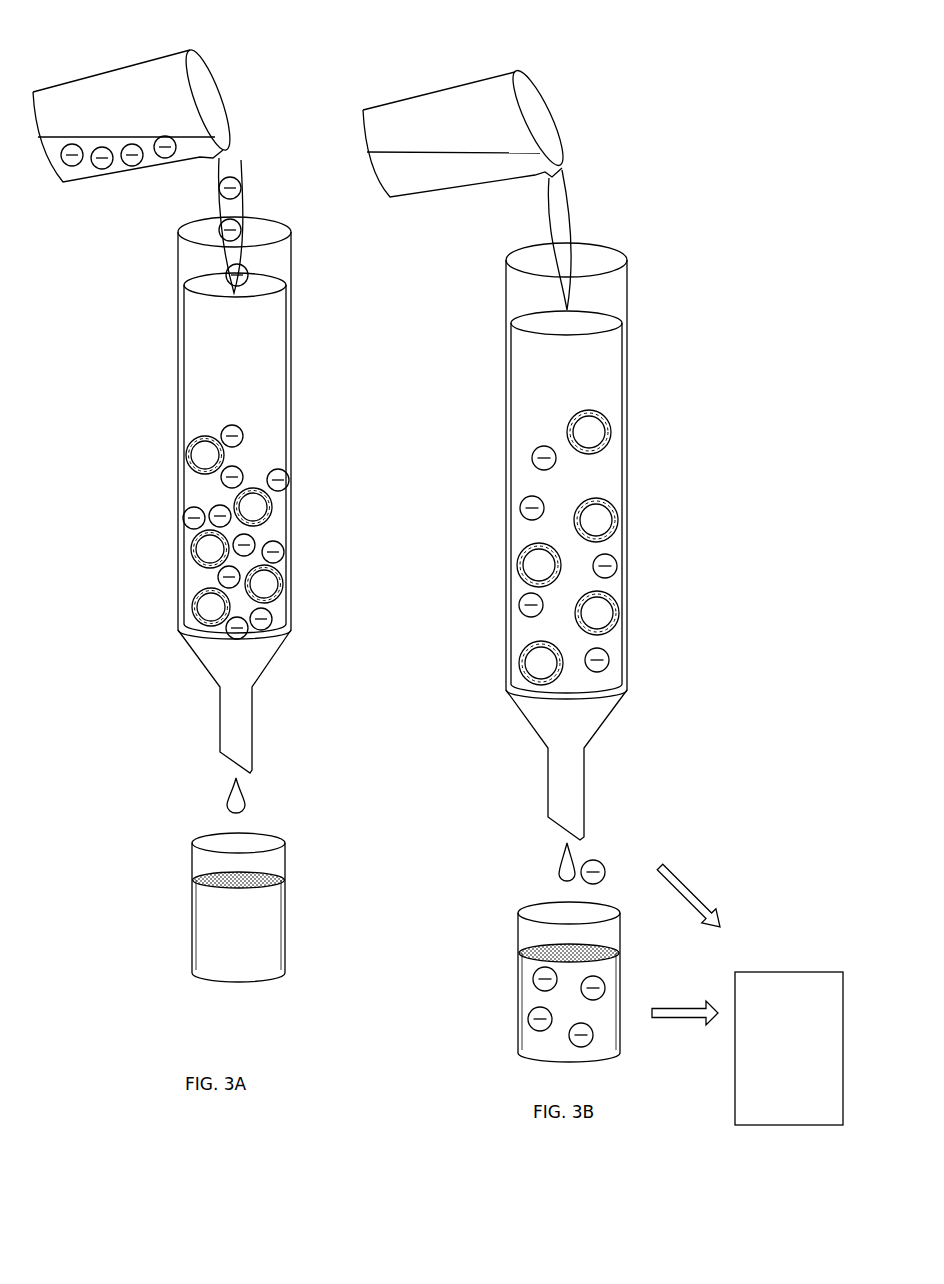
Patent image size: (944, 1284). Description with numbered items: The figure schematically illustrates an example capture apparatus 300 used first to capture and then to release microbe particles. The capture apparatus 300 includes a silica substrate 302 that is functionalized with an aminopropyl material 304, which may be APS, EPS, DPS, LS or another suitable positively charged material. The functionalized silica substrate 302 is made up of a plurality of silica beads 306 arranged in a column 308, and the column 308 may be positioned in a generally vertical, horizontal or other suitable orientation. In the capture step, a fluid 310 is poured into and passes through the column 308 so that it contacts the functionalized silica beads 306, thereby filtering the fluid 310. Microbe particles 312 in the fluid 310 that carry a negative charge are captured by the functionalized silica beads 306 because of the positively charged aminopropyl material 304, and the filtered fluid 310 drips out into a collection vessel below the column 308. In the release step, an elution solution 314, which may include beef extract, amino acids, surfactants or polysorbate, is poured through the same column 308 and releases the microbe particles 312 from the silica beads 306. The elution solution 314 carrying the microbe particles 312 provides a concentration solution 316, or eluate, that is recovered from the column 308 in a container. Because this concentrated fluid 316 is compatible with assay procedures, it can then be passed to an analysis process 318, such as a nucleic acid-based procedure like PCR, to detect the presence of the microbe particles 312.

In FIG. 3A, the capture apparatus 300 is at (126, 42).
In FIG. 3B, the capture apparatus 300 is at (611, 102).
In FIG. 3A, the silica substrate 302 is at (140, 524).
In FIG. 3A, the aminopropyl material 304 is at (200, 445).
In FIG. 3A, the silica beads 306 is at (205, 455).
In FIG. 3B, the silica beads 306 is at (593, 430).
In FIG. 3A, the column 308 is at (292, 300).
In FIG. 3B, the column 308 is at (627, 310).
In FIG. 3A, the fluid 310 is at (238, 168).
In FIG. 3A, the microbe particles 312 is at (102, 163).
In FIG. 3B, the microbe particles 312 is at (607, 567).
In FIG. 3B, the elution solution 314 is at (572, 213).
In FIG. 3B, the concentration solution 316 is at (532, 998).
In FIG. 3B, the analysis process 318 is at (780, 972).